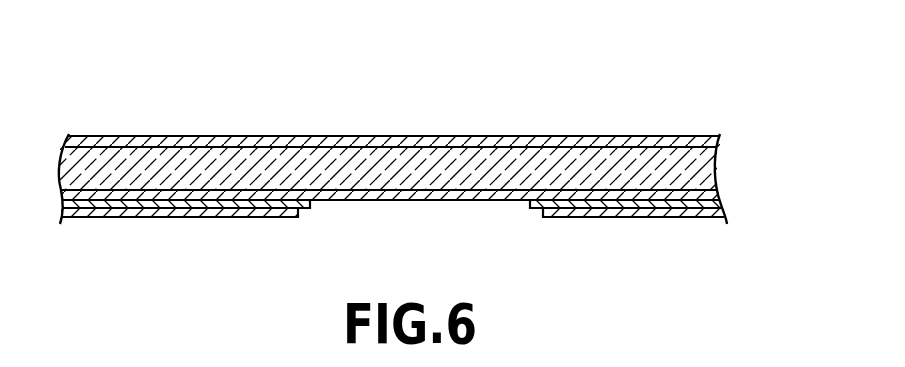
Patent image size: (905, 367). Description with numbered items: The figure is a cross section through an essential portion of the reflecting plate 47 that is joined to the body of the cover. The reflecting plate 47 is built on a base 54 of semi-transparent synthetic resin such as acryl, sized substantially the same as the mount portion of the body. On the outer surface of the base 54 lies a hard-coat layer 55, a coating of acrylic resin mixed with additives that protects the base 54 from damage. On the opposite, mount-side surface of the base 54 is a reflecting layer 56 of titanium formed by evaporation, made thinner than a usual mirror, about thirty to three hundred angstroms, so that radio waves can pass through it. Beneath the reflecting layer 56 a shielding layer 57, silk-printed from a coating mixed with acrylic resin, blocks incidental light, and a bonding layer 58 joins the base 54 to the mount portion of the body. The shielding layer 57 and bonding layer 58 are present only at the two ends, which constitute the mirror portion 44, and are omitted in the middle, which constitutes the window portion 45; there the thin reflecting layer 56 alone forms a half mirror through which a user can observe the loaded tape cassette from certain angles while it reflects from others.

The mirror portion 44 is at (298, 122).
The window portion 45 is at (520, 122).
The reflecting plate 47 is at (687, 95).
The base 54 is at (704, 167).
The hard-coat layer 55 is at (703, 142).
The reflecting layer 56 is at (712, 196).
The shielding layer 57 is at (722, 205).
The bonding layer 58 is at (699, 217).